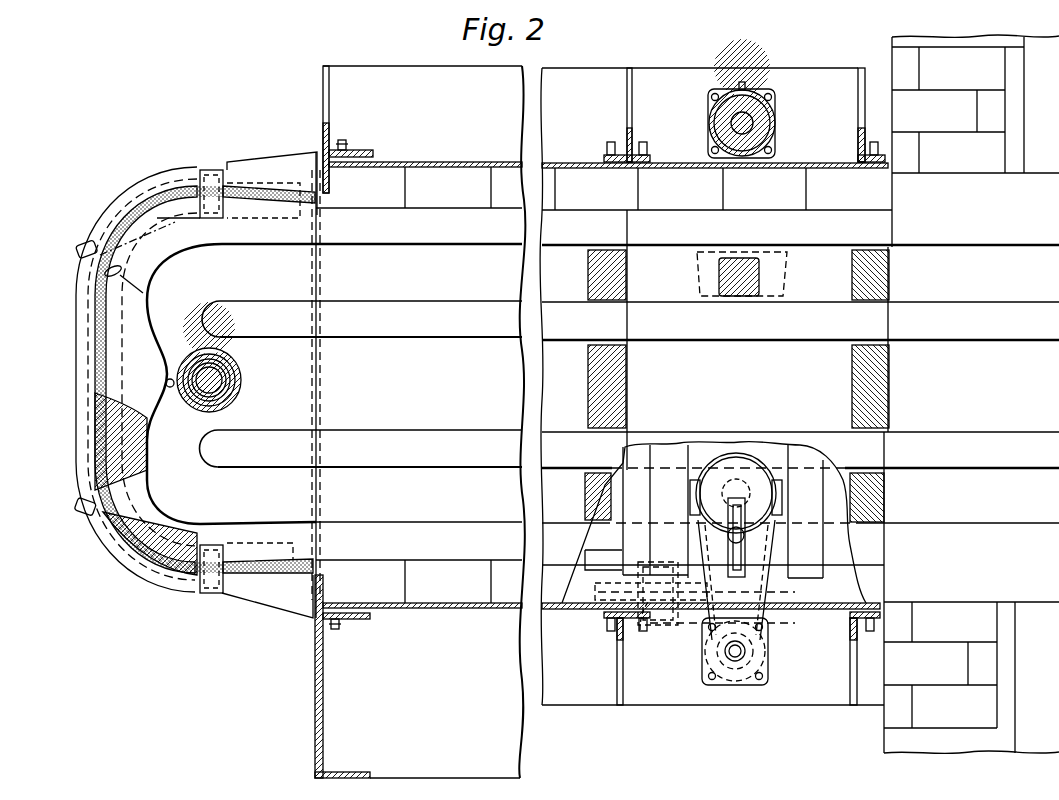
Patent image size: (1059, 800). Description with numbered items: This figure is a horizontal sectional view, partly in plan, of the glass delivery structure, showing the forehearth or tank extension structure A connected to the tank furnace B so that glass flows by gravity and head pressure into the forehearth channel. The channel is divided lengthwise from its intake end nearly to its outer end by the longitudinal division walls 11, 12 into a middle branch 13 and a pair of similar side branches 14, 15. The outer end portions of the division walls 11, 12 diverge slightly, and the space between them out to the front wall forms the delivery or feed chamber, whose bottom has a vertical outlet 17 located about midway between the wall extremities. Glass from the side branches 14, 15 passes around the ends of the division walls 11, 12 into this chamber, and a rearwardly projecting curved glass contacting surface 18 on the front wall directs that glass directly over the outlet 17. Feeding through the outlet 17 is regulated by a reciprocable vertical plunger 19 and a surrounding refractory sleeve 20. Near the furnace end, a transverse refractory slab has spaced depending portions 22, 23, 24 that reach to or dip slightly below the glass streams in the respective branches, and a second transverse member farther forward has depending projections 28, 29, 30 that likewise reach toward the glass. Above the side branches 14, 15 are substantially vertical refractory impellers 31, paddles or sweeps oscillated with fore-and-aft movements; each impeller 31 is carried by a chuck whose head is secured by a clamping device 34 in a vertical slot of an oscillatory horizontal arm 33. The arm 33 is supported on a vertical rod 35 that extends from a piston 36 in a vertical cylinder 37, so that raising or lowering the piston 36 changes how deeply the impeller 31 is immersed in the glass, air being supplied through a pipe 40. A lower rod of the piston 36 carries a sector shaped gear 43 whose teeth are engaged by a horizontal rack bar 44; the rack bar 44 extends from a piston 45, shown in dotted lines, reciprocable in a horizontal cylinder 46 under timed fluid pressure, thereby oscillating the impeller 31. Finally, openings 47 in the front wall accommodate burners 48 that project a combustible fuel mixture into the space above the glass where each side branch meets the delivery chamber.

The longitudinal division wall 11 is at (430, 326).
The longitudinal division wall 12 is at (420, 450).
The middle branch 13 is at (376, 381).
The side branch 14 is at (334, 384).
The side branch 15 is at (419, 503).
The vertical outlet 17 is at (204, 408).
The curved glass contacting surface 18 is at (168, 382).
The reciprocable vertical plunger 19 is at (228, 375).
The refractory sleeve 20 is at (222, 383).
The depending portion 22 is at (878, 508).
The depending portion 23 is at (875, 390).
The depending portion 24 is at (878, 283).
The depending projection 28 is at (588, 478).
The depending projection 29 is at (615, 400).
The depending projection 30 is at (620, 290).
The refractory impeller 31 is at (740, 300).
The oscillatory horizontal arm 33 is at (760, 575).
The clamping device 34 is at (770, 510).
The vertical rod 35 is at (735, 122).
The piston 36 is at (760, 105).
The vertical cylinder 37 is at (775, 140).
The pipe 40 is at (745, 84).
The sector shaped gear 43 is at (735, 624).
The horizontal rack bar 44 is at (709, 593).
The piston 45 is at (680, 630).
The horizontal cylinder 46 is at (651, 626).
The opening 47 is at (95, 283).
The burner 48 is at (82, 245).
The forehearth or tank extension structure A is at (253, 630).
The tank furnace B is at (862, 728).